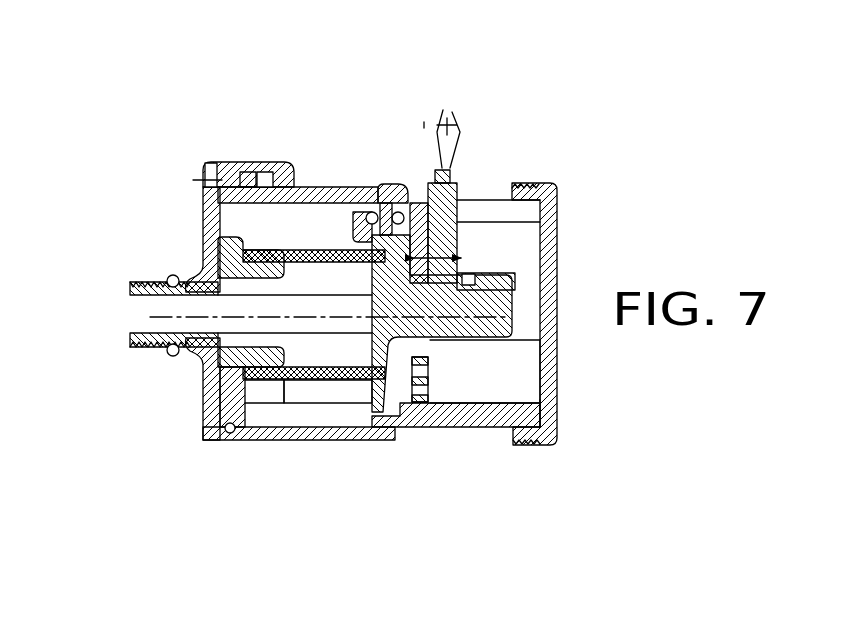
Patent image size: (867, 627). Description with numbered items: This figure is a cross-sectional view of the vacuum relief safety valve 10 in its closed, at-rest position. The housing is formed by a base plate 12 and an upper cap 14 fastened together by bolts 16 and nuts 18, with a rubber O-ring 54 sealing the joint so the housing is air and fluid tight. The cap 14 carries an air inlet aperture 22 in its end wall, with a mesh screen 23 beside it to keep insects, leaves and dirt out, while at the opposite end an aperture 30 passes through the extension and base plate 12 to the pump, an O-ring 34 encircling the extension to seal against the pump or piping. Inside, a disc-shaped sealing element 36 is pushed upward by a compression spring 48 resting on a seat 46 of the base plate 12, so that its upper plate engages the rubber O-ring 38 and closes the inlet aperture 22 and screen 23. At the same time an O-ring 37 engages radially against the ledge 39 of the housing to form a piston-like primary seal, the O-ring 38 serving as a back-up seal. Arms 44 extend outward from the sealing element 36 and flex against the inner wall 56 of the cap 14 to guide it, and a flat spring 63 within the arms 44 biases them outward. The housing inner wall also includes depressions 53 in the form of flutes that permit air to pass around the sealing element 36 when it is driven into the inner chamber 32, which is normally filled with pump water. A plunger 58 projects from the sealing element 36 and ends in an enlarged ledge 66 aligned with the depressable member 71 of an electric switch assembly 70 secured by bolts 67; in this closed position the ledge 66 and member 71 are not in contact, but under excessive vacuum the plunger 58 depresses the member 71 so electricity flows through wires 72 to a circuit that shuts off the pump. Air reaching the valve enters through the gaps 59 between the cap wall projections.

The vacuum relief safety valve 10 is at (632, 230).
The base plate 12 is at (210, 390).
The upper cap 14 is at (385, 440).
The bolts 16 is at (203, 168).
The nuts 18 is at (272, 183).
The air inlet aperture 22 is at (517, 348).
The mesh screen 23 is at (428, 347).
The aperture 30 is at (137, 315).
The inner chamber 32 is at (240, 227).
The O-ring 34 is at (170, 277).
The sealing element 36 is at (380, 185).
The O-ring 37 is at (360, 400).
The rubber O-ring 38 is at (410, 440).
The ledge 39 is at (372, 440).
The arms 44 is at (278, 408).
The seat 46 is at (245, 358).
The spring 48 is at (222, 436).
The depression 53 is at (331, 187).
The rubber O-ring 54 is at (205, 181).
The inner wall 56 is at (320, 400).
The plunger 58 is at (558, 412).
The gaps 59 is at (477, 212).
The flat spring 63 is at (293, 183).
The ledge 66 is at (557, 209).
The bolts 67 is at (462, 272).
The electric switch assembly 70 is at (452, 200).
The depressable member 71 is at (520, 223).
The wires 72 is at (445, 118).